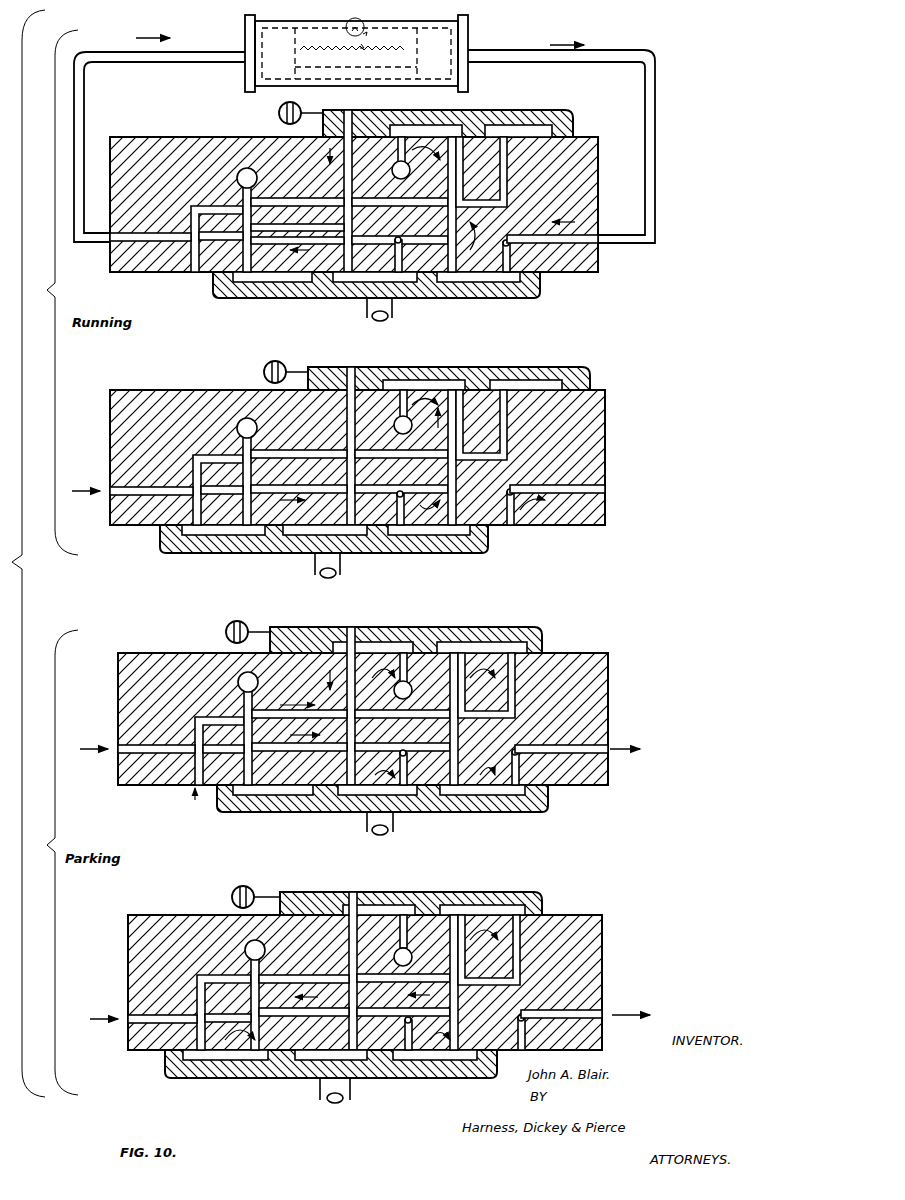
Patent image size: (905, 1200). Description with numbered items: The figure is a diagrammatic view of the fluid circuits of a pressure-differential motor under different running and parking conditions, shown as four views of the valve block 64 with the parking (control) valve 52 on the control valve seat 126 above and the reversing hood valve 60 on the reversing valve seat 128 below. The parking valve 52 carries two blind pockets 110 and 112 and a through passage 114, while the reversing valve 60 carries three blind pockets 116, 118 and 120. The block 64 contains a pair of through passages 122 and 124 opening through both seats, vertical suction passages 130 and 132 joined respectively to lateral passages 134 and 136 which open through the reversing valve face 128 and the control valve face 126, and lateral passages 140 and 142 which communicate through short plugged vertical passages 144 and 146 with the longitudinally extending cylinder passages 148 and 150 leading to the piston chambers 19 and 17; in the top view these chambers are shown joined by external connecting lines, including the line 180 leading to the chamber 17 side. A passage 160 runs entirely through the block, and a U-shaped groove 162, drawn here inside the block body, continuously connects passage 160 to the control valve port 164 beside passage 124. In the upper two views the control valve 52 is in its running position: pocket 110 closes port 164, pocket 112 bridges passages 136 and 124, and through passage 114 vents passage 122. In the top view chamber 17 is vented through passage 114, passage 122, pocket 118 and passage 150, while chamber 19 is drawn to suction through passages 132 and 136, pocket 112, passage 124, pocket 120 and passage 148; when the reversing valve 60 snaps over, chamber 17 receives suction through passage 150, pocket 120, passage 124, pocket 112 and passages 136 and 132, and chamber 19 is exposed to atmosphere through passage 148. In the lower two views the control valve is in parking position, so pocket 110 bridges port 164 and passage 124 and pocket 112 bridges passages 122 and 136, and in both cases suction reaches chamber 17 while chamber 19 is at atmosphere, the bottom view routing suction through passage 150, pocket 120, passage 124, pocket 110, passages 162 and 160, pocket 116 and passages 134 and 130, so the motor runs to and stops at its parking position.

The chamber space 17 is at (243, 33).
The chamber space 19 is at (470, 27).
The parking valve 52 is at (575, 114).
The hood valve 60 is at (412, 300).
The valve block 64 is at (590, 183).
The blind pocket 110 is at (518, 128).
The blind pocket 112 is at (435, 128).
The through passage 114 is at (350, 122).
The blind pocket 116 is at (262, 284).
The blind pocket 118 is at (345, 284).
The blind pocket 120 is at (500, 285).
The through passage 122 is at (346, 181).
The through passage 124 is at (450, 166).
The control valve seat 126 is at (580, 138).
The reversing valve seat 128 is at (582, 275).
The vertically extending passage 130 is at (236, 174).
The vertically extending passage 132 is at (396, 178).
The lateral passage 134 is at (254, 220).
The lateral passage 136 is at (397, 150).
The lateral passage 140 is at (488, 290).
The lateral passage 142 is at (383, 508).
The plugged vertical passage 144 is at (512, 244).
The plugged vertical passage 146 is at (402, 244).
The longitudinally extending passage 148 is at (625, 245).
The longitudinally extending passage 150 is at (382, 232).
The passage 160 is at (193, 262).
The shallow groove 162 is at (276, 198).
The control valve port 164 is at (510, 142).
The supply conduit 180 is at (85, 127).